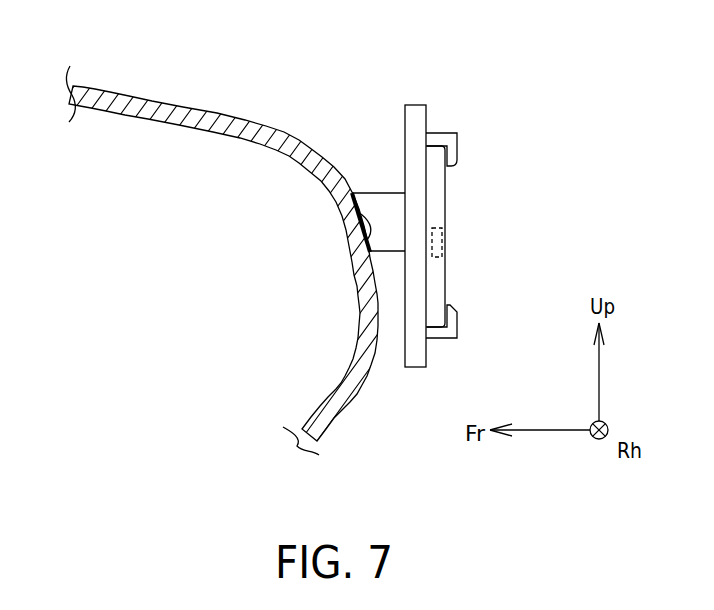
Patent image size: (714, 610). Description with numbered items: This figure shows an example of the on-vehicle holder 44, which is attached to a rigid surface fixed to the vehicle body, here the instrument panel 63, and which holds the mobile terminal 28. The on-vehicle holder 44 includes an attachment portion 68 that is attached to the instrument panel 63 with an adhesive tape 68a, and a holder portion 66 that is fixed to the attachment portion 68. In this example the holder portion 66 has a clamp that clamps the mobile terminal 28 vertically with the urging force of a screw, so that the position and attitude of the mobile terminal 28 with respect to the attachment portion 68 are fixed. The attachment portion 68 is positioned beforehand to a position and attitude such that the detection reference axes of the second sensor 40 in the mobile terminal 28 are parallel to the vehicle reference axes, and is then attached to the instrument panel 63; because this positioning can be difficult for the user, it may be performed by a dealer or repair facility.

The instrument panel 63 is at (259, 121).
The attachment portion 68 is at (383, 199).
The adhesive tape 68a is at (362, 245).
The on-vehicle holder 44 is at (430, 94).
The holder portion 66 is at (443, 135).
The mobile terminal 28 is at (437, 184).
The second sensor 40 is at (443, 242).